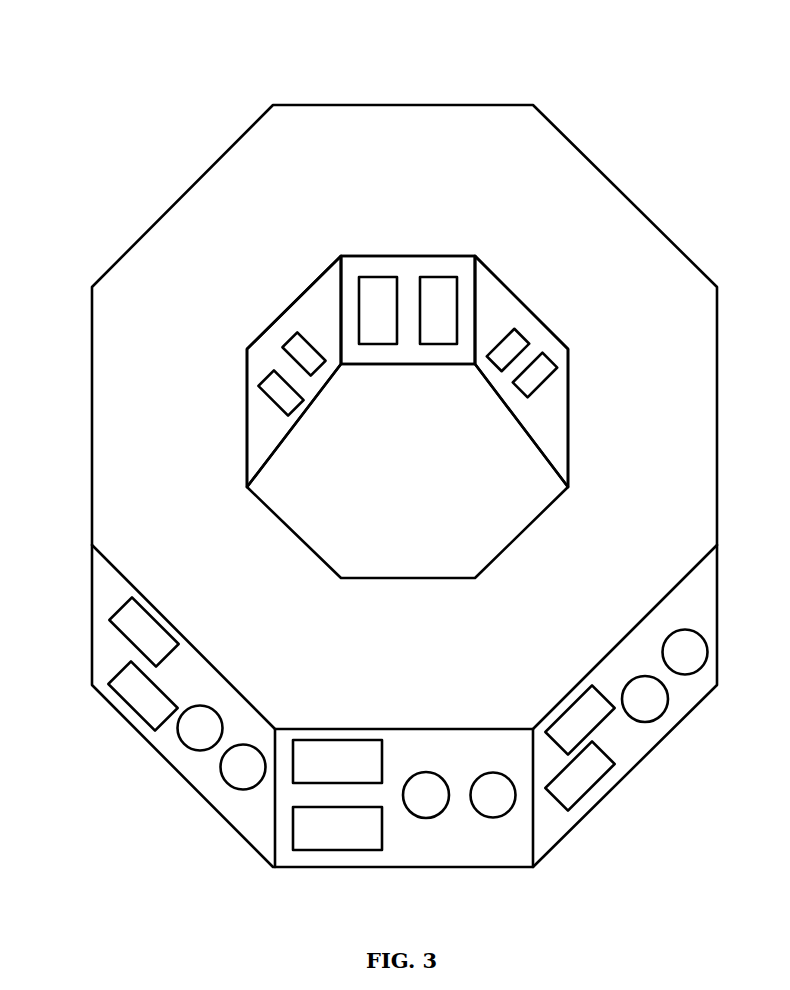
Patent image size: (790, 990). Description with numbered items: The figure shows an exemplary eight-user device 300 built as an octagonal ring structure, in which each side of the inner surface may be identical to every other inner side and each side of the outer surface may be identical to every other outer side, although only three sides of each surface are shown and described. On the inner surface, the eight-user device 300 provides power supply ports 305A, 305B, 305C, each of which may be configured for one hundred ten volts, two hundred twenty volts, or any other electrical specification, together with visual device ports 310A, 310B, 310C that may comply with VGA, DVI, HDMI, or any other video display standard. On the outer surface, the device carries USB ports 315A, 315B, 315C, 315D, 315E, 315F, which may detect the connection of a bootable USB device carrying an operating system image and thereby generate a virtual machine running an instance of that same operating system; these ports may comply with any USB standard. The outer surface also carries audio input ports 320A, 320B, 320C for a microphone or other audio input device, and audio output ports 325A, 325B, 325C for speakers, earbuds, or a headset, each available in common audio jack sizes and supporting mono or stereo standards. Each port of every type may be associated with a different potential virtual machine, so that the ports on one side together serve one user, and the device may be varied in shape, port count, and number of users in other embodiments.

The eight-user device 300 is at (577, 143).
The power supply port 305A is at (300, 412).
The power supply port 305B is at (385, 344).
The power supply port 305C is at (492, 372).
The visual device port 310A is at (285, 347).
The visual device port 310B is at (440, 277).
The visual device port 310C is at (545, 357).
The USB port 315A is at (120, 607).
The USB port 315B is at (118, 668).
The USB port 315C is at (332, 738).
The USB port 315D is at (343, 852).
The USB port 315E is at (568, 703).
The USB port 315F is at (593, 795).
The audio input port 320A is at (200, 752).
The audio input port 320B is at (428, 772).
The audio input port 320C is at (683, 703).
The audio output port 325A is at (245, 790).
The audio output port 325B is at (492, 820).
The audio output port 325C is at (690, 630).